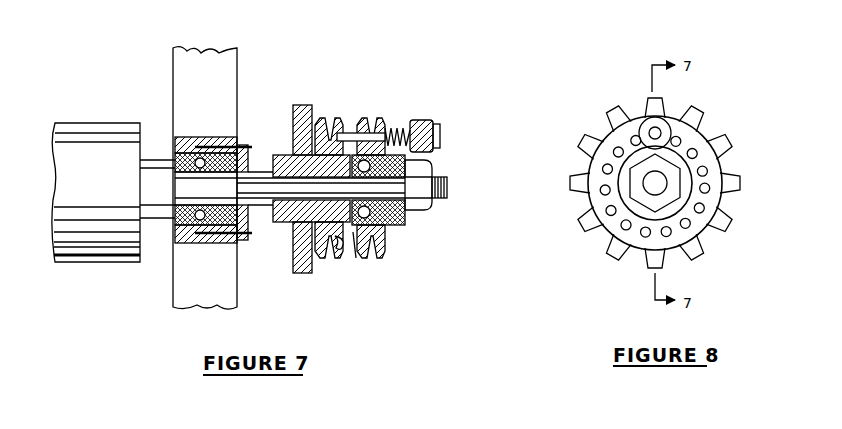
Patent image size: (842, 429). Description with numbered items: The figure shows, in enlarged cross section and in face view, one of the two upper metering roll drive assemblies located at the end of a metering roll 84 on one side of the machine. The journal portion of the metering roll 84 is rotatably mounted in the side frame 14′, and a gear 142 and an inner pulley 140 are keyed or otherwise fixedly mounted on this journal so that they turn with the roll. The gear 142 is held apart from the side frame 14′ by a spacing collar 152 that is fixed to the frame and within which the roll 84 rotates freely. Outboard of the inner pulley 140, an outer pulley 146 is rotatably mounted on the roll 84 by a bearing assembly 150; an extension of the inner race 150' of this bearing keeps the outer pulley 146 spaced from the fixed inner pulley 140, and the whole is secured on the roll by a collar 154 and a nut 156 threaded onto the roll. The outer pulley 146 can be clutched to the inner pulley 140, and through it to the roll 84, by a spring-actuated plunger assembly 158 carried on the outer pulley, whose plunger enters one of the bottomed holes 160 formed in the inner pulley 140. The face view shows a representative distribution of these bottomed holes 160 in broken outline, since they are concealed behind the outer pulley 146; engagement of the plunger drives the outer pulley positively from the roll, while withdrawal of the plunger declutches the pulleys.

In FIG. 7, the side frame 14′ is at (173, 93).
In FIG. 7, the metering roll 84 is at (108, 190).
In FIG. 8, the metering roll 84 is at (646, 192).
In FIG. 7, the inner pulley 140 is at (330, 121).
In FIG. 7, the gear 142 is at (304, 105).
In FIG. 7, the outer pulley 146 is at (380, 131).
In FIG. 7, the bearing assembly 150 is at (393, 188).
In FIG. 7, the inner race 150' is at (372, 255).
In FIG. 7, the spacing collar 152 is at (244, 159).
In FIG. 7, the collar 154 is at (402, 228).
In FIG. 7, the nut 156 is at (432, 173).
In FIG. 7, the spring-actuated plunger assembly 158 is at (452, 118).
In FIG. 8, the spring-actuated plunger assembly 158 is at (664, 121).
In FIG. 7, the bottomed holes 160 is at (342, 250).
In FIG. 8, the bottomed holes 160 is at (602, 166).